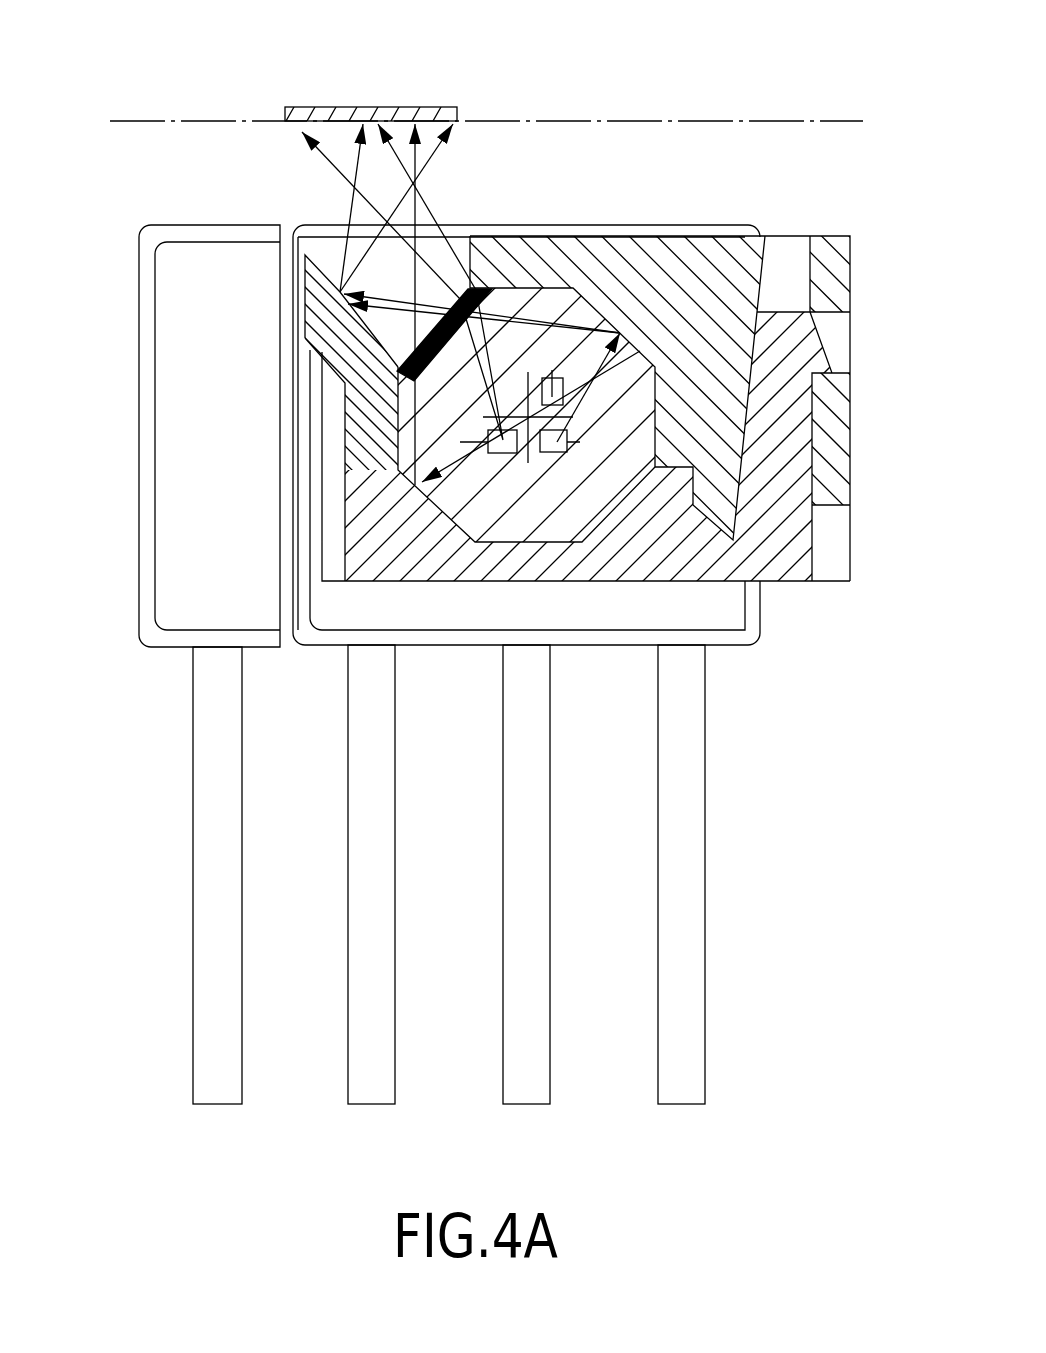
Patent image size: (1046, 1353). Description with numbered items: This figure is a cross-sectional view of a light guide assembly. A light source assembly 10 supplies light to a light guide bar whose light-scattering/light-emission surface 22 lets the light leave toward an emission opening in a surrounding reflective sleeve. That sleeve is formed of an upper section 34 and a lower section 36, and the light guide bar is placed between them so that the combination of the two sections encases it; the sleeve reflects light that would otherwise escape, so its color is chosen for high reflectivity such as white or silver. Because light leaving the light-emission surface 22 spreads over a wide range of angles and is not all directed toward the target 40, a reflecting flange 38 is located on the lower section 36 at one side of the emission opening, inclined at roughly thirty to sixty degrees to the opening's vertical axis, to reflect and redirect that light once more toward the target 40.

The light source assembly 10 is at (633, 224).
The light-scattering/light-emission surface 22 is at (465, 291).
The upper section 34 is at (725, 262).
The lower section 36 is at (683, 553).
The reflecting flange 38 is at (318, 303).
The target 40 is at (458, 116).